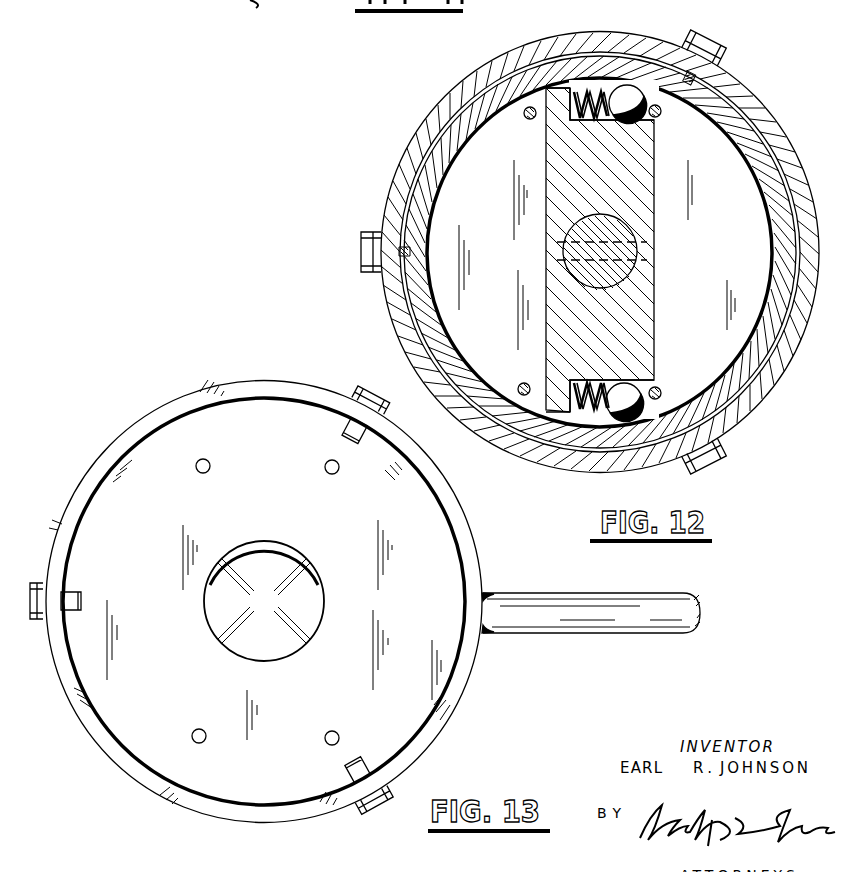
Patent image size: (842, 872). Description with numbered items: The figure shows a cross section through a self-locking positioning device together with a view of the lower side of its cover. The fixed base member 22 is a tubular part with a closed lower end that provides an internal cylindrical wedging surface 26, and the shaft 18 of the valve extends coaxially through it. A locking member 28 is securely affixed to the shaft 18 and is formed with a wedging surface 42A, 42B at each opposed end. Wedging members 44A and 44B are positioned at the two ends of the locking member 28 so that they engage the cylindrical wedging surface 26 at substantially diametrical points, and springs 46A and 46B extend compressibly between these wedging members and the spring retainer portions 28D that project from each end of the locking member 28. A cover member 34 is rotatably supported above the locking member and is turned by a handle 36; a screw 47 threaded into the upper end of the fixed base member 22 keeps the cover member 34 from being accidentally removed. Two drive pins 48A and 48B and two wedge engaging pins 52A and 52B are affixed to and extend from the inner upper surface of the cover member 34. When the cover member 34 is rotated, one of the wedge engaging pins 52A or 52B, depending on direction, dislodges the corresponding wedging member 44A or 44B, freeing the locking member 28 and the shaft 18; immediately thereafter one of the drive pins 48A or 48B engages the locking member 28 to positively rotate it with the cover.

In FIG. 12, the shaft 18 is at (622, 262).
In FIG. 13, the shaft 18 is at (264, 601).
In FIG. 12, the fixed base member 22 is at (778, 222).
In FIG. 13, the fixed base member 22 is at (257, 592).
In FIG. 12, the cylindrical wedging surface 26 is at (778, 300).
In FIG. 12, the locking member 28 is at (656, 310).
In FIG. 12, the spring retainer portion 28D is at (557, 88).
In FIG. 12, the cover member 34 is at (412, 148).
In FIG. 13, the cover member 34 is at (245, 382).
In FIG. 13, the handle 36 is at (608, 635).
In FIG. 12, the wedging surface 42A is at (607, 122).
In FIG. 12, the wedging surface 42B is at (599, 379).
In FIG. 12, the wedging member 44A is at (640, 90).
In FIG. 12, the wedging member 44B is at (638, 420).
In FIG. 12, the spring 46A is at (586, 90).
In FIG. 12, the spring 46B is at (586, 412).
In FIG. 12, the screw 47 is at (362, 248).
In FIG. 13, the screw 47 is at (211, 600).
In FIG. 12, the drive pin 48A is at (527, 118).
In FIG. 13, the drive pin 48A is at (203, 730).
In FIG. 12, the drive pin 48B is at (527, 384).
In FIG. 13, the drive pin 48B is at (203, 474).
In FIG. 12, the wedge engaging pin 52A is at (660, 116).
In FIG. 13, the wedge engaging pin 52A is at (332, 731).
In FIG. 12, the wedge engaging pin 52B is at (660, 389).
In FIG. 13, the wedge engaging pin 52B is at (338, 472).